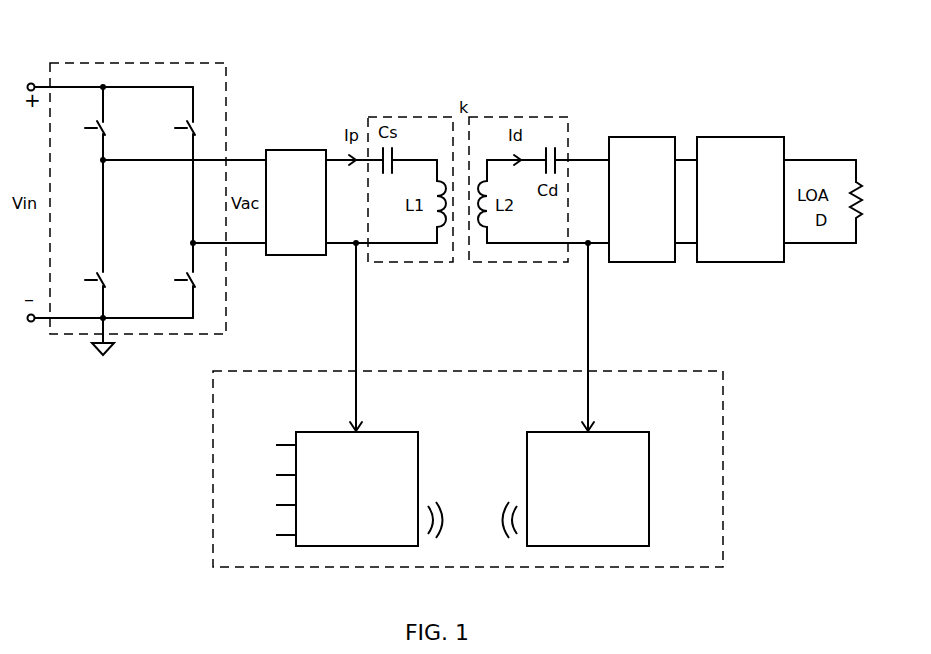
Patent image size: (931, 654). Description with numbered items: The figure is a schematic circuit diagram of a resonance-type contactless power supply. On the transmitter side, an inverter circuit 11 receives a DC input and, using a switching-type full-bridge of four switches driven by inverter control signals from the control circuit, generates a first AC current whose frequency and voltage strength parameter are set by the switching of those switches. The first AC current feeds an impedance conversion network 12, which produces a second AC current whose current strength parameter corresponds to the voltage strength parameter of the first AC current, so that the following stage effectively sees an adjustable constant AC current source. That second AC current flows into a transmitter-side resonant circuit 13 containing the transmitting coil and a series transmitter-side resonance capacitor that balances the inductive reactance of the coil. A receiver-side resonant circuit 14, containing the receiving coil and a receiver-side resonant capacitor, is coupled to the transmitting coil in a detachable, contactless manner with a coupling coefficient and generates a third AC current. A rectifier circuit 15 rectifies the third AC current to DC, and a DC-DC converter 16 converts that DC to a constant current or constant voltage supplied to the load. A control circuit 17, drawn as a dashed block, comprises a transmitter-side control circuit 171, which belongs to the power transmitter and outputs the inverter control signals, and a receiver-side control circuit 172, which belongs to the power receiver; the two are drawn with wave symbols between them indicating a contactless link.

The inverter circuit 11 is at (185, 63).
The impedance conversion network 12 is at (287, 150).
The transmitter-side resonant circuit 13 is at (397, 117).
The receiver-side resonant circuit 14 is at (533, 117).
The rectifier circuit 15 is at (640, 137).
The DC-DC converter 16 is at (740, 137).
The control circuit 17 is at (680, 371).
The transmitter-side control circuit 171 is at (392, 432).
The receiver-side control circuit 172 is at (649, 466).